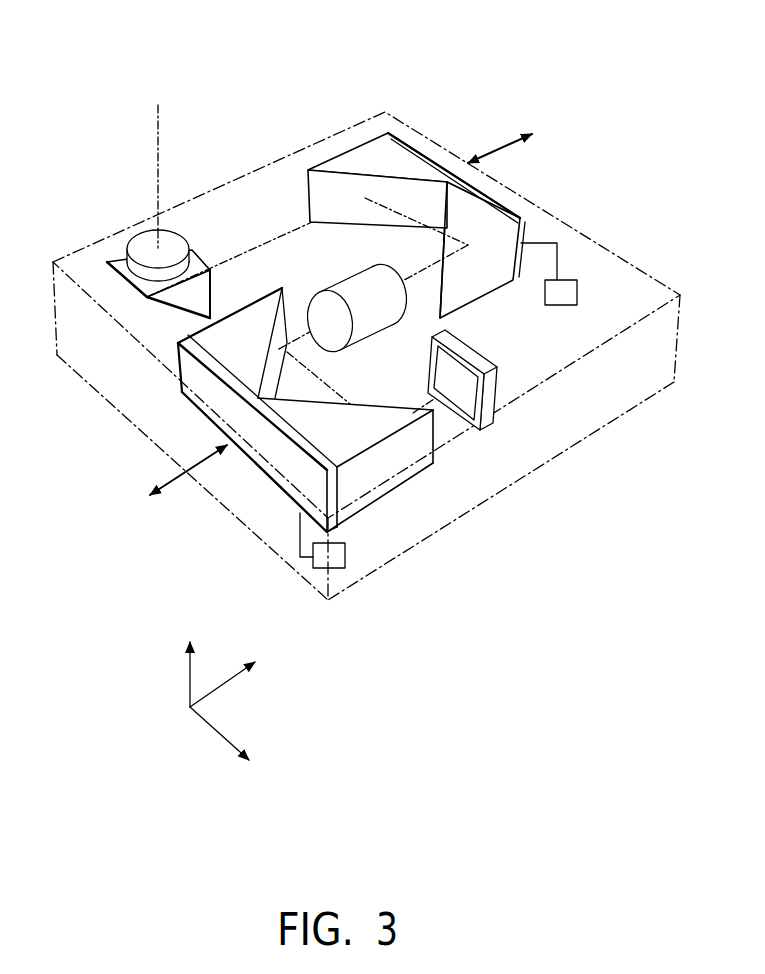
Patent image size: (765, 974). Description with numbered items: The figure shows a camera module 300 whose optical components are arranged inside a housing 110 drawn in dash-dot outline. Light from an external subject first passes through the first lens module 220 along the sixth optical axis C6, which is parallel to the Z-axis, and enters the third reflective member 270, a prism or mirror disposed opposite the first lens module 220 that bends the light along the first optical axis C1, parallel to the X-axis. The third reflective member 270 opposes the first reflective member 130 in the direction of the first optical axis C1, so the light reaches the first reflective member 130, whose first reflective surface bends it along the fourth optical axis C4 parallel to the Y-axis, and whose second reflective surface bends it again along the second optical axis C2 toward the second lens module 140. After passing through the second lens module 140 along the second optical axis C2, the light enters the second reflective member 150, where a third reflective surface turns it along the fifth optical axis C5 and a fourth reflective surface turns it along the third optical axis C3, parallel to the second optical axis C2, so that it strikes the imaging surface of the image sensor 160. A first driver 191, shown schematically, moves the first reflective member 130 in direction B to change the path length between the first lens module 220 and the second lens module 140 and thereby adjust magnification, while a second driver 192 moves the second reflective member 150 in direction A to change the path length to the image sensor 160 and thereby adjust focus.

The camera module 300 is at (135, 37).
The housing 110 is at (70, 253).
The first reflective member 130 is at (355, 147).
The second lens module 140 is at (340, 268).
The second reflective member 150 is at (395, 505).
The image sensor 160 is at (494, 438).
The first driver 191 is at (576, 280).
The second driver 192 is at (321, 568).
The first lens module 220 is at (128, 236).
The third reflective member 270 is at (158, 310).
The first optical axis C1 is at (258, 246).
The second optical axis C2 is at (457, 252).
The third optical axis C3 is at (450, 400).
The fourth optical axis C4 is at (408, 218).
The fifth optical axis C5 is at (320, 370).
The sixth optical axis C6 is at (159, 122).